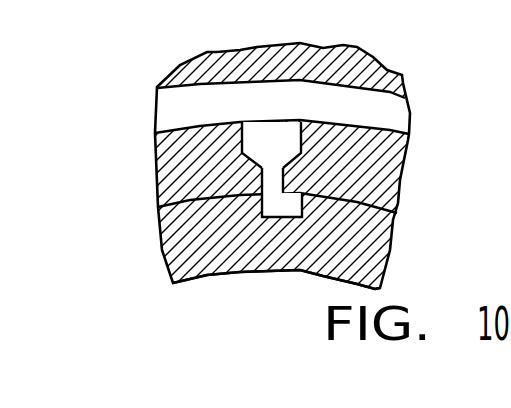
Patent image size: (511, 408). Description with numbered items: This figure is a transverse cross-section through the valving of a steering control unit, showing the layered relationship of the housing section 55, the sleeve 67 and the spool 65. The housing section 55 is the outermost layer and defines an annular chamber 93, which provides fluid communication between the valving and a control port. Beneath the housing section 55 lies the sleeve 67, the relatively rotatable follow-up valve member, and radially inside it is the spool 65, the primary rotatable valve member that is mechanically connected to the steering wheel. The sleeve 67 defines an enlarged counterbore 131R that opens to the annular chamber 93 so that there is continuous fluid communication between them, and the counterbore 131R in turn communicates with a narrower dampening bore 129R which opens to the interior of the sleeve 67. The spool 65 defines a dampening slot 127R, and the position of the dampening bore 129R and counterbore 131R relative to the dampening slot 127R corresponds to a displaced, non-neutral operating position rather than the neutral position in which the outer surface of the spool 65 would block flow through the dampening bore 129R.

The housing section 55 is at (368, 74).
The annular chamber 93 is at (172, 103).
The sleeve 67 is at (165, 183).
The spool 65 is at (177, 250).
The counterbore 131R is at (288, 138).
The dampening bore 129R is at (268, 180).
The dampening slot 127R is at (273, 208).